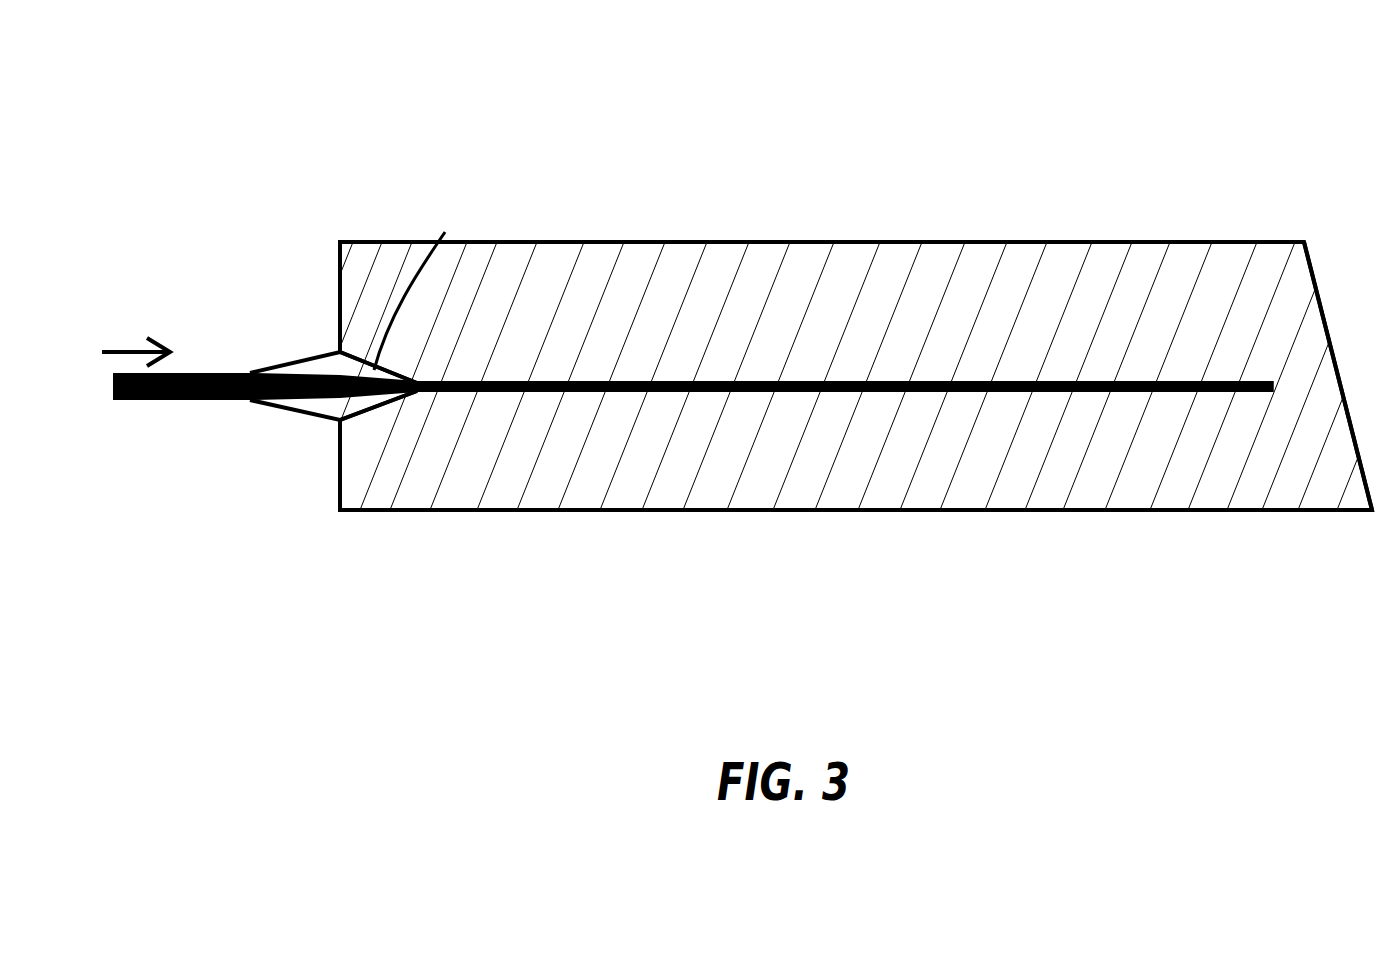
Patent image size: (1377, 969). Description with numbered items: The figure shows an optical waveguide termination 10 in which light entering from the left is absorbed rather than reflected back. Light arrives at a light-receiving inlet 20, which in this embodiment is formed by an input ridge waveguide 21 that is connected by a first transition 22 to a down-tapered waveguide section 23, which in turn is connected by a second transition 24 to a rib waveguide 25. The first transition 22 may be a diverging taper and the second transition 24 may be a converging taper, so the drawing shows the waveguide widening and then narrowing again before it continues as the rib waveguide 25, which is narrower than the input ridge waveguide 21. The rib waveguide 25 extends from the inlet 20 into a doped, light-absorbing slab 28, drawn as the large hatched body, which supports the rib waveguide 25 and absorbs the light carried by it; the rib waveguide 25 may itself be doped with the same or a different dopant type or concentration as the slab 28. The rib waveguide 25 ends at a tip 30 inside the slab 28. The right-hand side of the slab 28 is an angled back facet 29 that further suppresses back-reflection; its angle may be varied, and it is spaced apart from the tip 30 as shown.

The optical waveguide termination 10 is at (278, 89).
The light-receiving inlet 20 is at (278, 445).
The input ridge waveguide 21 is at (172, 401).
The first transition 22 is at (283, 362).
The down-tapered waveguide section 23 is at (388, 393).
The second transition 24 is at (445, 232).
The rib waveguide 25 is at (900, 381).
The doped, light-absorbing slab 28 is at (802, 500).
The angled back facet 29 is at (1327, 318).
The tip 30 is at (1270, 381).